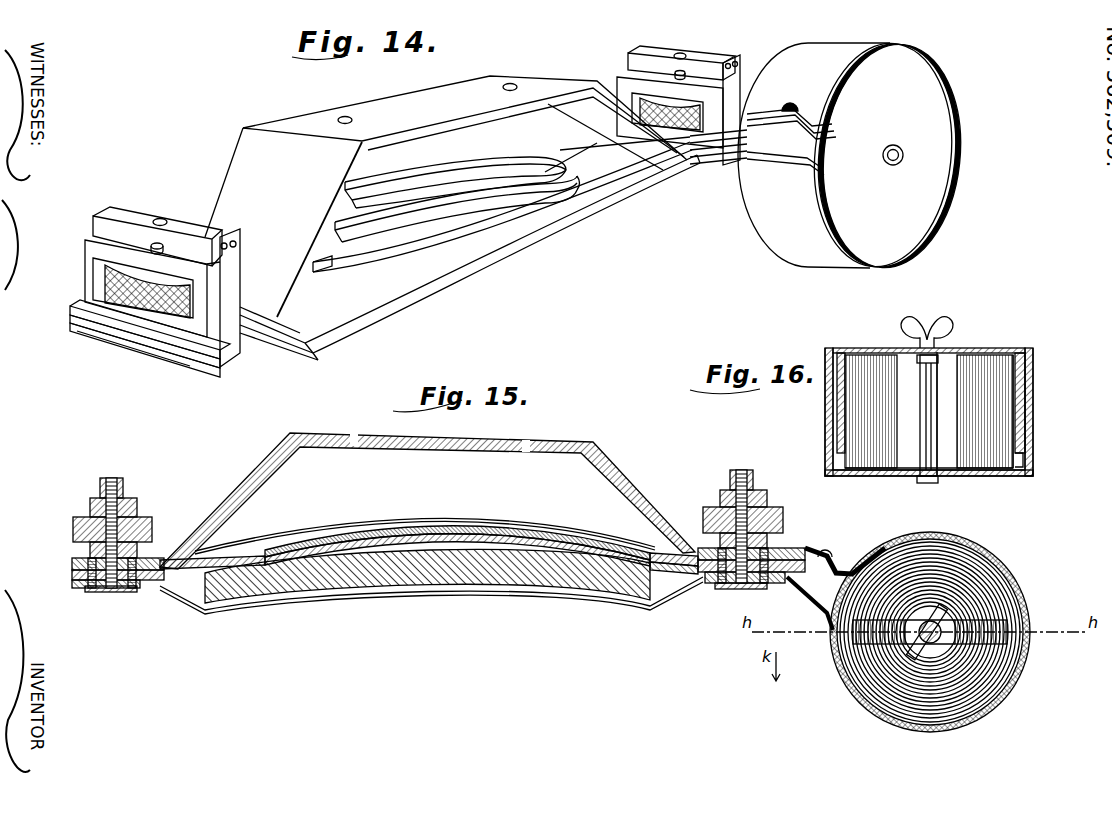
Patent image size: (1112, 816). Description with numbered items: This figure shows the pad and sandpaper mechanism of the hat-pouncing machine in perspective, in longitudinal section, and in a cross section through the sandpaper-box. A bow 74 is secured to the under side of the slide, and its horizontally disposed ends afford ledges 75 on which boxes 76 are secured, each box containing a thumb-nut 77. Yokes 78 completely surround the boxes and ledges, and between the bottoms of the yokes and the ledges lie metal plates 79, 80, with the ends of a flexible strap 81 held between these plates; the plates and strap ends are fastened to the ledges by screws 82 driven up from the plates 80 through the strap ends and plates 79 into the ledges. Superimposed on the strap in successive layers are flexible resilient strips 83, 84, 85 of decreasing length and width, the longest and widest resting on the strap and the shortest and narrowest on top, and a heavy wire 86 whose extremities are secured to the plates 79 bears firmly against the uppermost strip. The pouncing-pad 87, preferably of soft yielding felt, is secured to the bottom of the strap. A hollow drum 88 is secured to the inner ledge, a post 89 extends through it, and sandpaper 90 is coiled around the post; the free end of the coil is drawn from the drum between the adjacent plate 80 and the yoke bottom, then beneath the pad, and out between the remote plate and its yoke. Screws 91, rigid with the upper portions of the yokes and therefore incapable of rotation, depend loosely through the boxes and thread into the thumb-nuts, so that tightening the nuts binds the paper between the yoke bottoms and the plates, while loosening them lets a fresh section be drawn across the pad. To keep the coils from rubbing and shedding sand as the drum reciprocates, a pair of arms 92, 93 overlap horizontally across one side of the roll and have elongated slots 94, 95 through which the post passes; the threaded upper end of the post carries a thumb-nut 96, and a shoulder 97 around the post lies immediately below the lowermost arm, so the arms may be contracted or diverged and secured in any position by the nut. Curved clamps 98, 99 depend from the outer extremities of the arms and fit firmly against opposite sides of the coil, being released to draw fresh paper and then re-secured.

In FIG. 14, the bow 74 is at (405, 118).
In FIG. 15, the bow 74 is at (387, 434).
In FIG. 14, the ledges 75 is at (70, 316).
In FIG. 15, the ledges 75 is at (72, 561).
In FIG. 14, the boxes 76 is at (85, 247).
In FIG. 15, the boxes 76 is at (137, 508).
In FIG. 14, the thumb-nuts 77 is at (105, 285).
In FIG. 15, the thumb-nuts 77 is at (152, 527).
In FIG. 14, the yokes 78 is at (112, 214).
In FIG. 15, the yokes 78 is at (101, 479).
In FIG. 14, the metal plates 79 is at (170, 352).
In FIG. 15, the metal plates 79 is at (72, 574).
In FIG. 14, the metal plates 80 is at (183, 368).
In FIG. 15, the metal plates 80 is at (72, 584).
In FIG. 14, the flexible strap 81 is at (483, 230).
In FIG. 15, the flexible strap 81 is at (192, 600).
In FIG. 15, the screws 82 is at (92, 590).
In FIG. 14, the flexible resilient strip 83 is at (347, 282).
In FIG. 15, the flexible resilient strip 83 is at (218, 559).
In FIG. 14, the flexible resilient strip 84 is at (393, 248).
In FIG. 15, the flexible resilient strip 84 is at (262, 550).
In FIG. 14, the flexible resilient strip 85 is at (412, 217).
In FIG. 15, the flexible resilient strip 85 is at (300, 535).
In FIG. 14, the heavy wire 86 is at (470, 180).
In FIG. 15, the heavy wire 86 is at (340, 530).
In FIG. 14, the pouncing-pad 87 is at (570, 218).
In FIG. 15, the pouncing-pad 87 is at (440, 578).
In FIG. 14, the hollow drum 88 is at (958, 164).
In FIG. 15, the hollow drum 88 is at (990, 560).
In FIG. 14, the post 89 is at (903, 153).
In FIG. 16, the post 89 is at (947, 357).
In FIG. 14, the sandpaper 90 is at (802, 165).
In FIG. 15, the sandpaper 90 is at (600, 590).
In FIG. 16, the sandpaper 90 is at (1015, 458).
In FIG. 14, the screws 91 is at (150, 243).
In FIG. 15, the screws 91 is at (92, 505).
In FIG. 15, the arm 92 is at (905, 720).
In FIG. 16, the arm 92 is at (1032, 335).
In FIG. 15, the arm 93 is at (890, 572).
In FIG. 16, the arm 93 is at (848, 348).
In FIG. 15, the elongated slot 94 is at (968, 700).
In FIG. 16, the elongated slot 94 is at (987, 352).
In FIG. 15, the elongated slot 95 is at (916, 585).
In FIG. 16, the elongated slot 95 is at (883, 348).
In FIG. 15, the thumb-nut 96 is at (850, 695).
In FIG. 16, the thumb-nut 96 is at (945, 318).
In FIG. 15, the shoulder 97 is at (926, 632).
In FIG. 16, the shoulder 97 is at (938, 372).
In FIG. 15, the clamp 98 is at (1020, 626).
In FIG. 16, the clamp 98 is at (1028, 473).
In FIG. 15, the clamp 99 is at (836, 640).
In FIG. 16, the clamp 99 is at (843, 413).